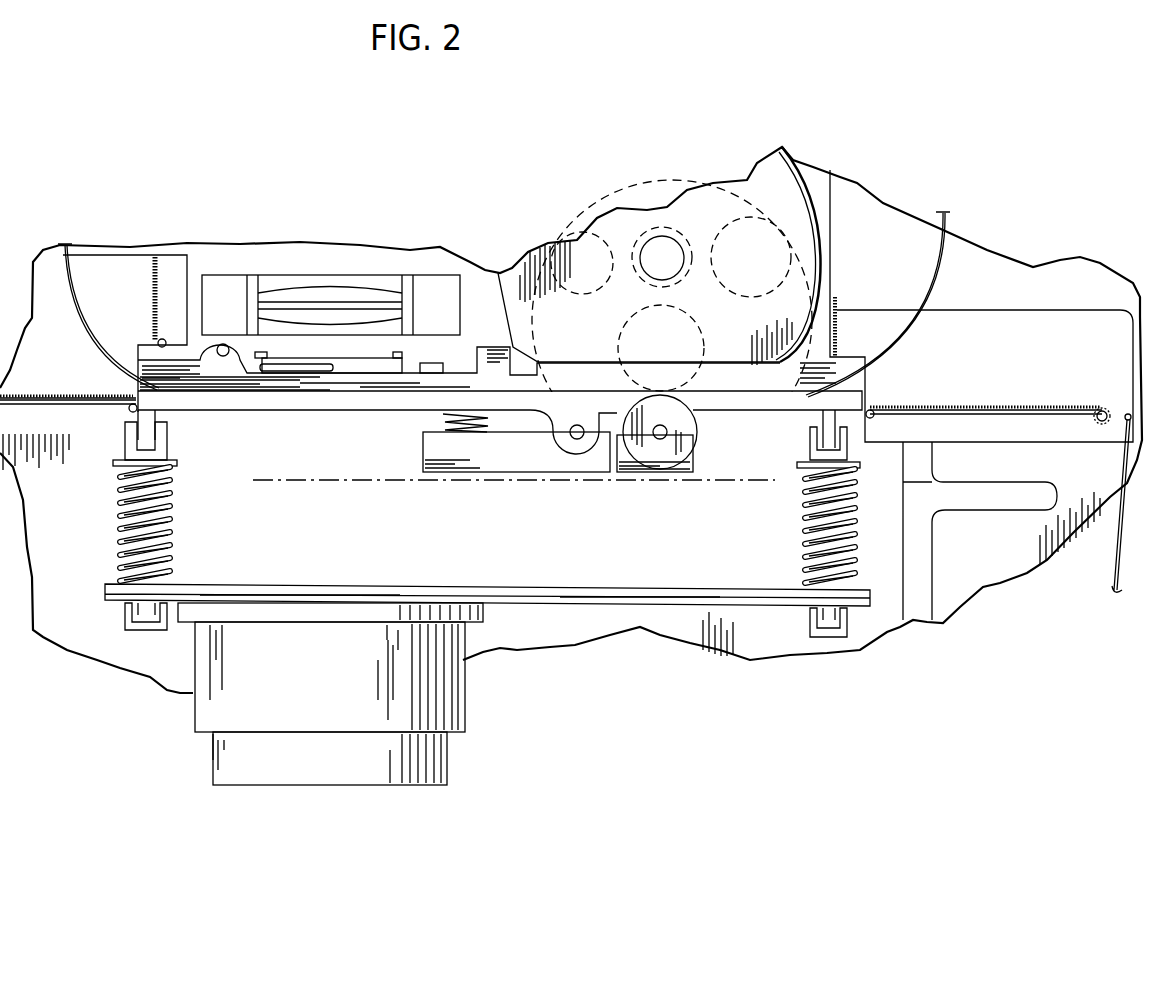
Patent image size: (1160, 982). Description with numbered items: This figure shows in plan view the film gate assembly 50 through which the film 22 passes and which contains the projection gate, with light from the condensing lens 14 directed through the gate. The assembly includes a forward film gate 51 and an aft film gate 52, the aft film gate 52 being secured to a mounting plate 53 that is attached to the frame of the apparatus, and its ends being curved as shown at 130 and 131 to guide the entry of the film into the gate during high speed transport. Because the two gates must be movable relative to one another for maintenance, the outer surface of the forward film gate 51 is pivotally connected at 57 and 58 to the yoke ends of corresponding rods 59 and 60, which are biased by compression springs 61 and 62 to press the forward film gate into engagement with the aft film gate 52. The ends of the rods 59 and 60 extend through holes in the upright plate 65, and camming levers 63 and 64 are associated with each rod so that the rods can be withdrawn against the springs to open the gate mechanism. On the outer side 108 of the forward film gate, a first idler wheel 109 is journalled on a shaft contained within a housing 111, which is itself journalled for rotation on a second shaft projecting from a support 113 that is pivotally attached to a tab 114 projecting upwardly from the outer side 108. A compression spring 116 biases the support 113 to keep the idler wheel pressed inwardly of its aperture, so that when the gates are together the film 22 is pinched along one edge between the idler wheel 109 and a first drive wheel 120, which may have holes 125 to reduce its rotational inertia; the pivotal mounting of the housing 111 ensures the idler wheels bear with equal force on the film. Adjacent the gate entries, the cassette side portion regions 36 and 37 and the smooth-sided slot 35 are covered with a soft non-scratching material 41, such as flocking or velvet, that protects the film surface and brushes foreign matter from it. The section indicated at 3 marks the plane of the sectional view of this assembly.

The section line 3- 3 is at (278, 486).
The condensing lens 14 is at (285, 292).
The film 22 is at (97, 350).
The slot 35 is at (1117, 413).
The side portion region 36 is at (1023, 413).
The side portion region 37 is at (72, 404).
The soft non-scratching material 41 is at (152, 300).
The film gate assembly 50 is at (100, 480).
The forward film gate 51 is at (270, 410).
The aft film gate 52 is at (457, 372).
The mounting plate 53 is at (555, 539).
The pivotal connection 57 is at (168, 433).
The pivotal connection 58 is at (805, 437).
The rod 59 is at (118, 547).
The rod 60 is at (803, 565).
The compression spring 61 is at (173, 528).
The compression spring 62 is at (857, 510).
The camming lever 63 is at (123, 622).
The camming lever 64 is at (808, 628).
The upright plate 65 is at (358, 586).
The outer side of the forward film gate 108 is at (357, 407).
The first idler wheel 109 is at (697, 430).
The housing 111 is at (638, 472).
The support 113 is at (443, 472).
The tab 114 is at (560, 448).
The compression spring 116 is at (443, 418).
The first drive wheel 120 is at (603, 332).
The holes 125 is at (742, 295).
The curved end 130 is at (838, 357).
The curved end 131 is at (142, 368).